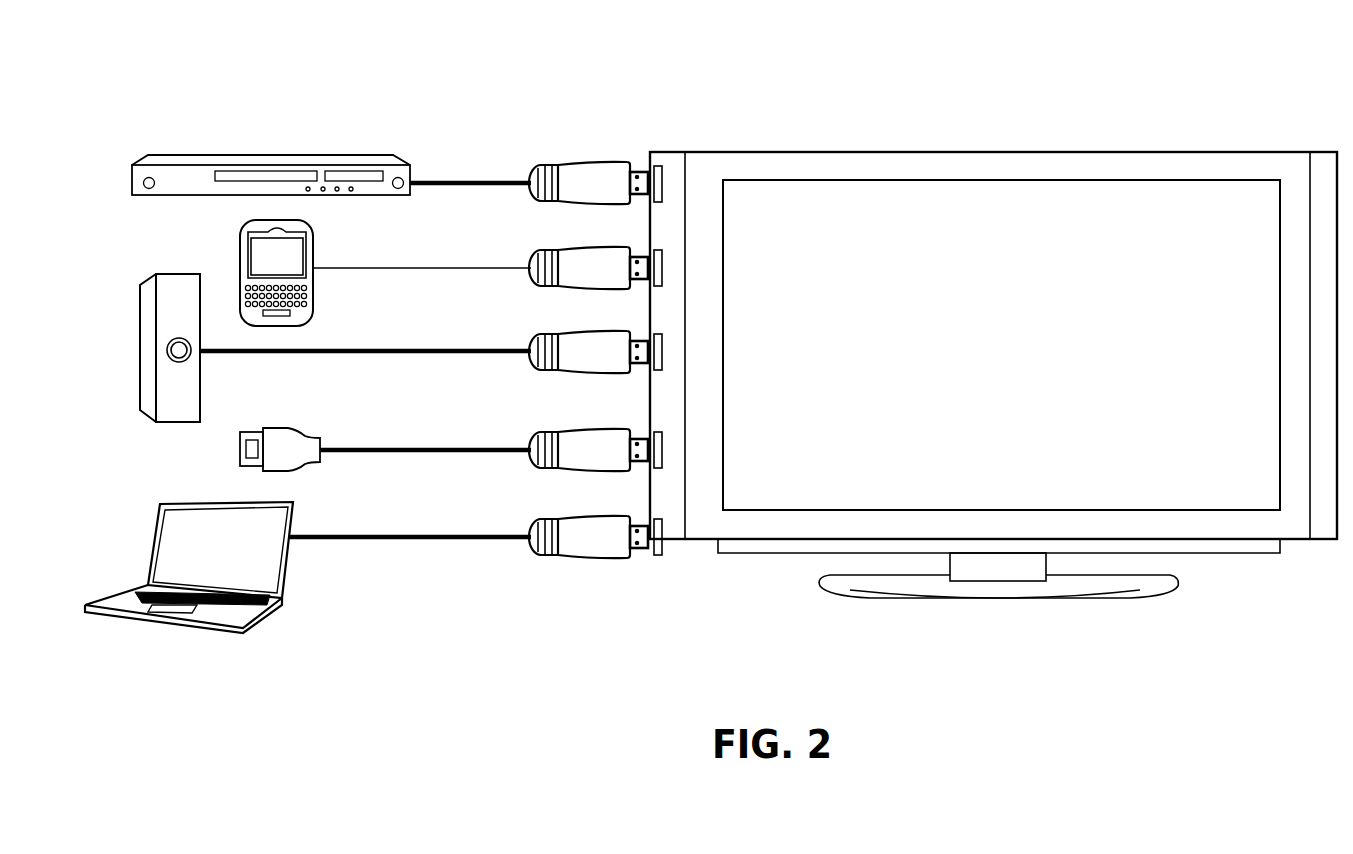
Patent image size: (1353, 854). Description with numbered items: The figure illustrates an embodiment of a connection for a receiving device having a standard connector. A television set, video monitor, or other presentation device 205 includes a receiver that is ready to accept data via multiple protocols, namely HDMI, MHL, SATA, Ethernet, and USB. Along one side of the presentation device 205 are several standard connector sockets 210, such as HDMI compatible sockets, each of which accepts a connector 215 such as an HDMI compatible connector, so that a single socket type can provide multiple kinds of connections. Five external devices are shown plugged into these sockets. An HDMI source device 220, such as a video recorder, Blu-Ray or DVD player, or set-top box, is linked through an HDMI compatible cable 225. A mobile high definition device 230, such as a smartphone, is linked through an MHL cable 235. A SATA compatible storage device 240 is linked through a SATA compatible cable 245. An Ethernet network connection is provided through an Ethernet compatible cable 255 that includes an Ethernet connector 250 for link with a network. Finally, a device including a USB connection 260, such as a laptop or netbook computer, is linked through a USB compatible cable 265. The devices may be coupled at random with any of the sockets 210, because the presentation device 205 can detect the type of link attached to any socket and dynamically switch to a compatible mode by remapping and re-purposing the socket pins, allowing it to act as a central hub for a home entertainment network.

The presentation device 205 is at (982, 150).
The standard connector socket 210 is at (658, 155).
The connector 215 is at (596, 150).
The HDMI source device 220 is at (315, 155).
The HDMI compatible cable 225 is at (470, 185).
The mobile high definition device 230 is at (315, 256).
The MHL cable 235 is at (422, 272).
The SATA compatible storage device 240 is at (184, 272).
The SATA compatible cable 245 is at (365, 353).
The Ethernet connector 250 is at (285, 427).
The Ethernet compatible cable 255 is at (425, 449).
The device including a USB connection 260 is at (286, 585).
The USB compatible cable 265 is at (410, 538).